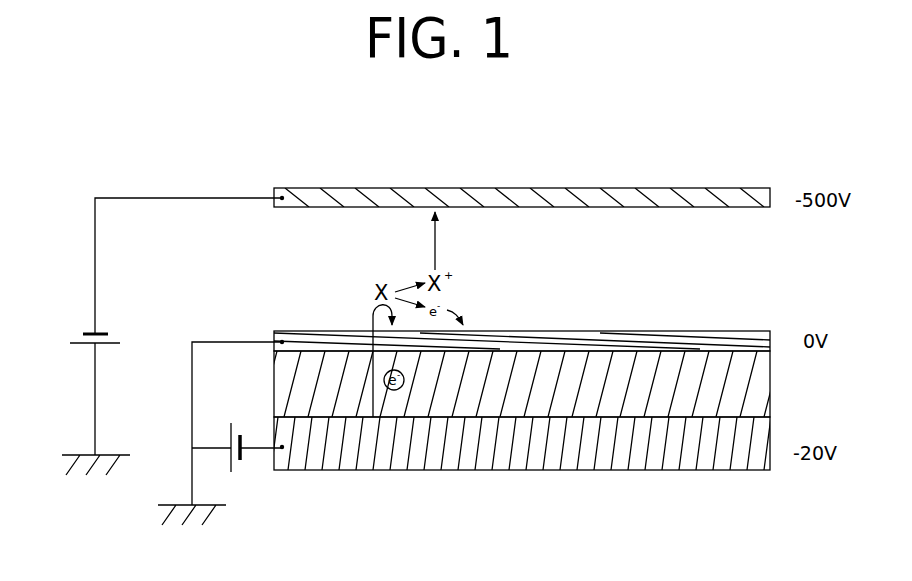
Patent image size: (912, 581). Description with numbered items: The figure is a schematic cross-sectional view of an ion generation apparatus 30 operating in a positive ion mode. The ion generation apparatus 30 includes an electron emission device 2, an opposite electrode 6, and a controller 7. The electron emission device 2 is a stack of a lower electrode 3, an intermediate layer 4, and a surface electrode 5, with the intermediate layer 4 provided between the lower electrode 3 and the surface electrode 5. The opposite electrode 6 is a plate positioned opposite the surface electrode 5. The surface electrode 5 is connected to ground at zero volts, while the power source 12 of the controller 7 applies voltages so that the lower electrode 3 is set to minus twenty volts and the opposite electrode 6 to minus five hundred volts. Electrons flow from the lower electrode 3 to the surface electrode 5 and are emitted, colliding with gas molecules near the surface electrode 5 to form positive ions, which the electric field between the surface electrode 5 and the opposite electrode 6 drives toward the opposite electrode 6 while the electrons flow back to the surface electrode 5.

The ion generation apparatus 30 is at (703, 151).
The opposite electrode 6 is at (560, 197).
The power source 12 is at (85, 333).
The controller 7 is at (236, 460).
The electron emission device 2 is at (638, 526).
The lower electrode 3 is at (573, 440).
The intermediate layer 4 is at (603, 380).
The surface electrode 5 is at (637, 340).